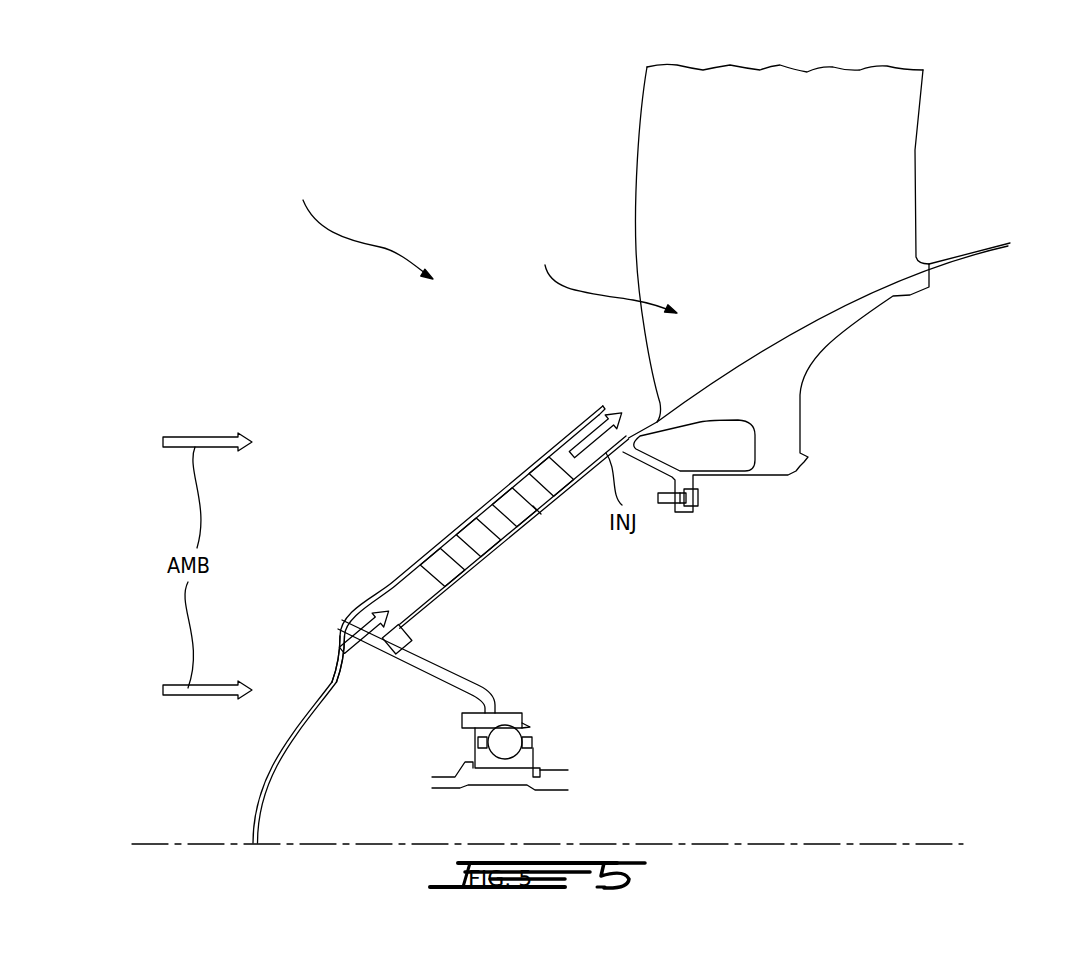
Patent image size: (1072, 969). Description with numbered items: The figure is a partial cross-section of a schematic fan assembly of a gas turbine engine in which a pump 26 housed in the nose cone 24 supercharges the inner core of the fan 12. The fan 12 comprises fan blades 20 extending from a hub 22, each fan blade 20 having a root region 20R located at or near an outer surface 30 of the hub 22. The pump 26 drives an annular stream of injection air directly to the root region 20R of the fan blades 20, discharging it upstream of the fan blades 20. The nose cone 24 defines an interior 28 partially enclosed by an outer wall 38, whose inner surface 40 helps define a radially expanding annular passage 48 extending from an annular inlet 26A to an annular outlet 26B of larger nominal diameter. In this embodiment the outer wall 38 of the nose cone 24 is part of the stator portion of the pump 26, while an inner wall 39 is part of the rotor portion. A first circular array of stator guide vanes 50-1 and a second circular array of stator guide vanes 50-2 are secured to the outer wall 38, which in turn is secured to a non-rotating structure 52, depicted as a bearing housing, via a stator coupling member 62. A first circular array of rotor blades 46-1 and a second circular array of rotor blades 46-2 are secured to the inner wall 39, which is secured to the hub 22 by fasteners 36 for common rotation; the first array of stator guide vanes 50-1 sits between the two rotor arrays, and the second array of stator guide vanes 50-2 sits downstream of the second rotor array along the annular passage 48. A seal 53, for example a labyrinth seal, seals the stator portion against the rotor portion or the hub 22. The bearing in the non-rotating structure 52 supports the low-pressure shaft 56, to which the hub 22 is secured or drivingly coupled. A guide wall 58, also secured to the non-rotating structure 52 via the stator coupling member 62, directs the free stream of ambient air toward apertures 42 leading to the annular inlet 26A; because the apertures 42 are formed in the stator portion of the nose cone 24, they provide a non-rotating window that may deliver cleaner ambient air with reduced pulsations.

The fan 12 is at (363, 225).
The fan blade 20 is at (788, 165).
The root region 20R is at (602, 276).
The hub 22 is at (780, 395).
The nose cone 24 is at (342, 622).
The pump 26 is at (455, 503).
The annular inlet 26A is at (433, 544).
The annular outlet 26B is at (598, 408).
The interior 28 is at (318, 762).
The outer surface 30 is at (890, 282).
The fastener 36 is at (697, 500).
The outer wall 38 is at (363, 601).
The inner wall 39 is at (483, 557).
The inner surface 40 is at (431, 598).
The aperture 42 is at (330, 639).
The first circular array of rotor blades 46-1 is at (420, 565).
The second circular array of rotor blades 46-2 is at (492, 504).
The annular passage 48 is at (537, 510).
The first circular array of stator guide vanes 50-1 is at (456, 535).
The second circular array of stator guide vanes 50-2 is at (529, 474).
The non-rotating structure 52 is at (527, 725).
The seal 53 is at (412, 643).
The low-pressure shaft 56 is at (553, 780).
The guide wall 58 is at (263, 792).
The stator coupling member 62 is at (493, 703).